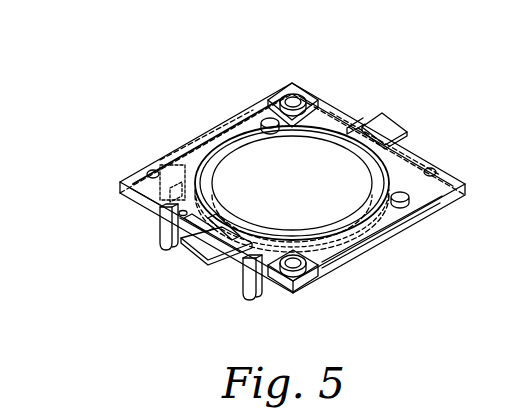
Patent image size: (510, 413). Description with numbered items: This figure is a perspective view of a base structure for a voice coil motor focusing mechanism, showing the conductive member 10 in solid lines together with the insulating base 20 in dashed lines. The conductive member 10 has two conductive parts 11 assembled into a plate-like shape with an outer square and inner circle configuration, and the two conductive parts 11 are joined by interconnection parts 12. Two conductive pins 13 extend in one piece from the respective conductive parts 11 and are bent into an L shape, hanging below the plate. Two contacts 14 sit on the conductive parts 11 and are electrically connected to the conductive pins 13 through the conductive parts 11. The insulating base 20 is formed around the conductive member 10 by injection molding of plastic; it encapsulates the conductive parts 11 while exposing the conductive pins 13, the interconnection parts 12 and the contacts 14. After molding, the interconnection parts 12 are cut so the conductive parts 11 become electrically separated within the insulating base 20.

The conductive member 10 is at (157, 101).
The conductive part 11 is at (238, 120).
The interconnection part 12 is at (384, 123).
The conductive pin 13 is at (160, 224).
The contact 14 is at (296, 97).
The insulating base 20 is at (137, 173).